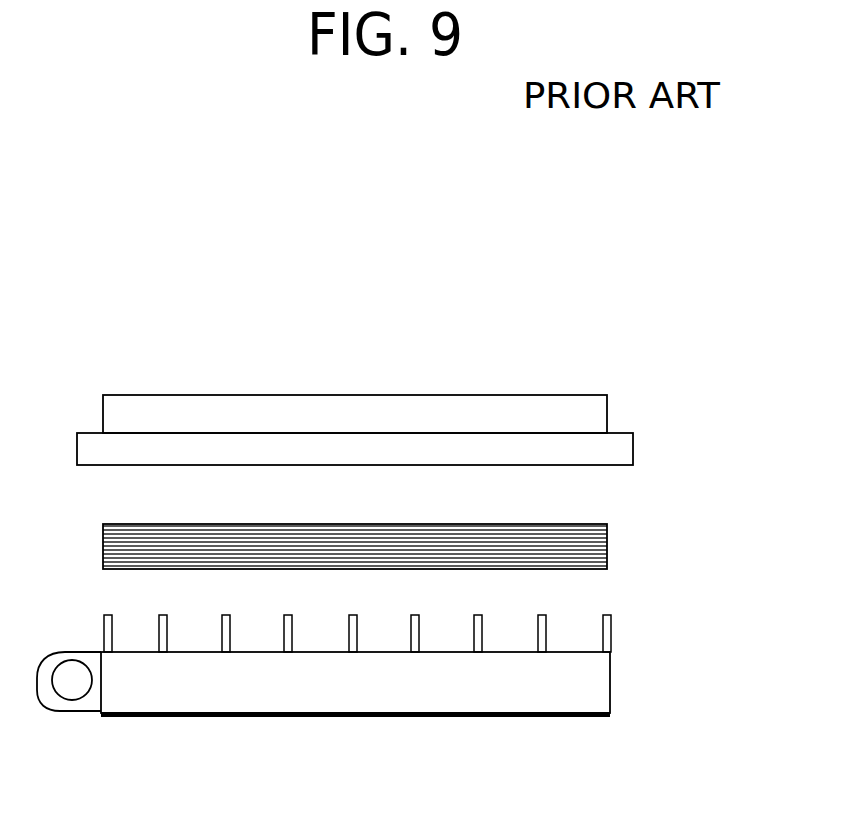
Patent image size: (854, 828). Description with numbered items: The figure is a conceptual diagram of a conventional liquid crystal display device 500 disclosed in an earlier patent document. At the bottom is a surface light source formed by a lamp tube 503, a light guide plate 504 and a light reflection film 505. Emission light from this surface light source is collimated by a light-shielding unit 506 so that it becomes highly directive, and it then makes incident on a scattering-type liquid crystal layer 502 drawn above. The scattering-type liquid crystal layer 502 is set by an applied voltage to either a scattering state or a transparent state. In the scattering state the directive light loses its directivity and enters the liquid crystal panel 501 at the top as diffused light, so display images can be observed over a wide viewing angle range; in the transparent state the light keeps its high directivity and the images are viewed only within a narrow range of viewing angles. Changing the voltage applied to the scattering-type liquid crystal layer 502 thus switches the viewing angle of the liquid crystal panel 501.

The liquid crystal display device 500 is at (142, 282).
The liquid crystal panel 501 is at (592, 415).
The scattering-type liquid crystal layer 502 is at (592, 545).
The lamp tube 503 is at (71, 685).
The light guide plate 504 is at (593, 668).
The light reflection film 505 is at (585, 715).
The light-shielding unit 506 is at (290, 632).